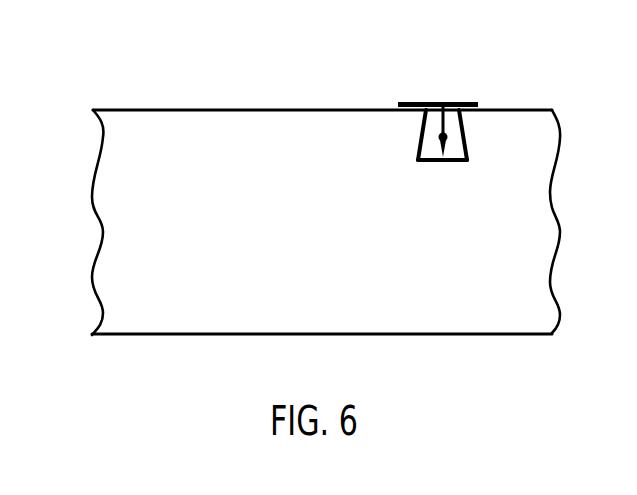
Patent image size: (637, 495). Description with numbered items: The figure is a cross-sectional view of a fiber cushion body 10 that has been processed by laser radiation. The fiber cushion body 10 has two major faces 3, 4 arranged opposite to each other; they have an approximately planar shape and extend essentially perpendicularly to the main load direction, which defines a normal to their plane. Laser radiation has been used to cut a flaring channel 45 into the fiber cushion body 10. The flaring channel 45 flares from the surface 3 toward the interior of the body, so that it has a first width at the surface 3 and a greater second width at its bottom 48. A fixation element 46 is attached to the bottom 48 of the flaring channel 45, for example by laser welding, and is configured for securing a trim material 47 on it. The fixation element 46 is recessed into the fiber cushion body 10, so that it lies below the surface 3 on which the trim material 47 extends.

The fiber cushion body 10 is at (91, 105).
The major face 3 is at (148, 110).
The major face 4 is at (155, 333).
The flaring channel 45 is at (418, 150).
The fixation element 46 is at (461, 141).
The trim material 47 is at (412, 102).
The bottom 48 is at (453, 163).